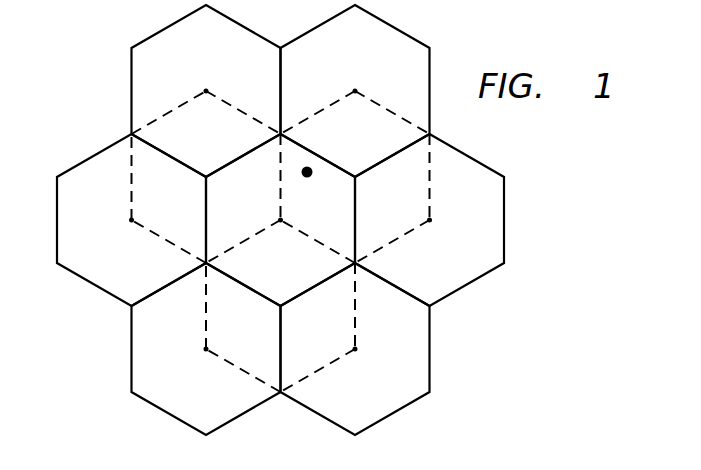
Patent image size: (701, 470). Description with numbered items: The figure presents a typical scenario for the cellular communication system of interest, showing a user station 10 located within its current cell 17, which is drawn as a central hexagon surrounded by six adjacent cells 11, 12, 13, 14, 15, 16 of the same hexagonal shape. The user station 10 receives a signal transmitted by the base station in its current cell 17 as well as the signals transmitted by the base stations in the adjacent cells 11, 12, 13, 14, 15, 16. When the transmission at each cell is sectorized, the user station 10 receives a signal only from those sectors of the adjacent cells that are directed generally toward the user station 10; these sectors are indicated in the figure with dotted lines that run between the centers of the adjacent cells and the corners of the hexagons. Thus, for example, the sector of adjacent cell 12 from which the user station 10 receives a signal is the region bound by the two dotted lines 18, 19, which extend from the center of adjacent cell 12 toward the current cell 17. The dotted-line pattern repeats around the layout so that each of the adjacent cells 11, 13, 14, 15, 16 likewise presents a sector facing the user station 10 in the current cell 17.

The user station 10 is at (309, 178).
The adjacent cell 11 is at (173, 56).
The adjacent cell 12 is at (366, 56).
The adjacent cell 13 is at (440, 271).
The adjacent cell 14 is at (365, 401).
The adjacent cell 15 is at (175, 402).
The adjacent cell 16 is at (100, 275).
The current cell 17 is at (279, 276).
The dotted line 18 is at (343, 100).
The dotted line 19 is at (380, 106).